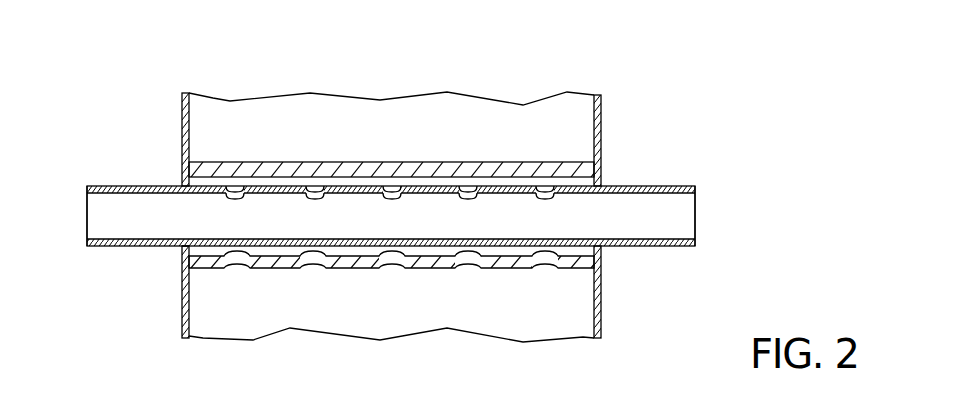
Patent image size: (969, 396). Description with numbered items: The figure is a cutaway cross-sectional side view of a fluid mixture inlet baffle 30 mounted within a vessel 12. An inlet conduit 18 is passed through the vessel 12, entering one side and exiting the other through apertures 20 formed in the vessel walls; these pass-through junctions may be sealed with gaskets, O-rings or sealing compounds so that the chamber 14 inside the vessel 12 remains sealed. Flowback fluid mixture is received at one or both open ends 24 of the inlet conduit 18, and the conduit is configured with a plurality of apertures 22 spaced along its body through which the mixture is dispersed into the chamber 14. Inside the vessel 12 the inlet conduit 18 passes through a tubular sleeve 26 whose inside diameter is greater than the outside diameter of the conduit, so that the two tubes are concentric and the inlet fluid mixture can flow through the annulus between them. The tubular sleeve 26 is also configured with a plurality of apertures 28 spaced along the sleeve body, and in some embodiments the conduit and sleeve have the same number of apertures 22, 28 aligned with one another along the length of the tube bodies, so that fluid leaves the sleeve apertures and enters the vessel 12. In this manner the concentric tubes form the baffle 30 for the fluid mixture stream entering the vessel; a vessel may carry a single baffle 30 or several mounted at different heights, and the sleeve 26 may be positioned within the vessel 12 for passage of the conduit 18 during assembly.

The vessel 12 is at (601, 296).
The chamber 14 is at (247, 308).
The inlet conduit 18 is at (655, 186).
The apertures 20 is at (183, 247).
The apertures 22 is at (238, 198).
The open ends 24 is at (87, 222).
The tubular sleeve 26 is at (357, 162).
The apertures 28 is at (393, 260).
The baffle 30 is at (437, 66).